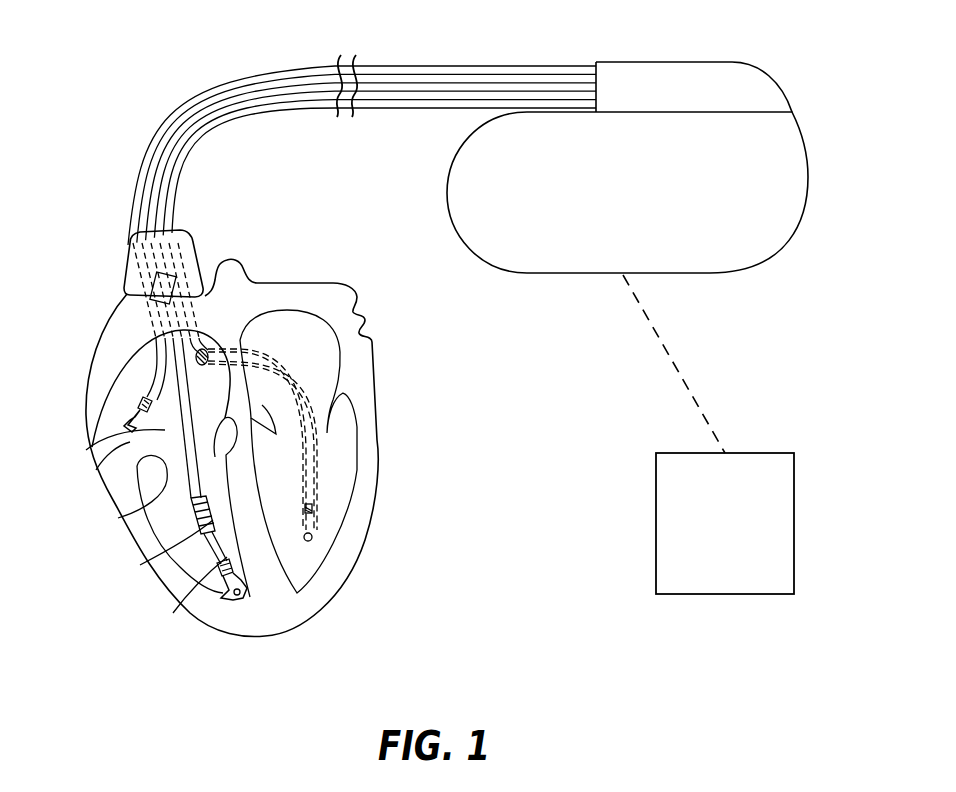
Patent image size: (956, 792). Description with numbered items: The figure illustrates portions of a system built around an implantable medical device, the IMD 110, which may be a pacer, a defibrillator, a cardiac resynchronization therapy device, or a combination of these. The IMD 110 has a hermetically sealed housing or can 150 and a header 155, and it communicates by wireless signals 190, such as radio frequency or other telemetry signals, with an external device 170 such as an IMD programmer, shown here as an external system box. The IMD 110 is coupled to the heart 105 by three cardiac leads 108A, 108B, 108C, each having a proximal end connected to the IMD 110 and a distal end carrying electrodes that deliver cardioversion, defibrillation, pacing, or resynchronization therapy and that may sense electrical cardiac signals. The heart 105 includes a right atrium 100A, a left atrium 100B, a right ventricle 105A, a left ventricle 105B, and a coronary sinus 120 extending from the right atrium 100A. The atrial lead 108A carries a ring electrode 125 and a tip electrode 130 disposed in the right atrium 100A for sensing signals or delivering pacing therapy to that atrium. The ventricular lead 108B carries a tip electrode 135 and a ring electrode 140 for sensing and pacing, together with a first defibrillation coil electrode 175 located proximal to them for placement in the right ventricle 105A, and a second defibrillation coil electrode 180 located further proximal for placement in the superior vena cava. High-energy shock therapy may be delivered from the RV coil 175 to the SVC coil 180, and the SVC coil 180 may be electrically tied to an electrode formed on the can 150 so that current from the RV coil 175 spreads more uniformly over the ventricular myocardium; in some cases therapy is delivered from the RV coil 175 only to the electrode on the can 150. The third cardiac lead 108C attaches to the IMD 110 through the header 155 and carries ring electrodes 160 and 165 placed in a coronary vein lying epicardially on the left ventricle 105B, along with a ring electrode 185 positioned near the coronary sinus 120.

The implantable medical device (IMD) 110 is at (657, 146).
The header 155 is at (770, 73).
The IMD housing or can 150 is at (808, 176).
The atrial lead 108A is at (267, 75).
The ventricular lead 108B is at (213, 110).
The third cardiac lead 108C is at (237, 133).
The second defibrillation coil electrode (SVC coil) 180 is at (155, 292).
The heart 105 is at (377, 418).
The right atrium 100A is at (137, 464).
The left atrium 100B is at (300, 328).
The right ventricle 105A is at (118, 518).
The left ventricle 105B is at (308, 565).
The ring electrode 125 is at (128, 397).
The tip electrode 130 is at (122, 435).
The first defibrillation coil electrode (RV coil) 175 is at (140, 565).
The ring electrode 140 is at (197, 578).
The tip electrode 135 is at (235, 594).
The ring electrode 185 is at (207, 337).
The coronary sinus 120 is at (203, 364).
The ring electrode 160 is at (312, 508).
The ring electrode 165 is at (310, 532).
The wireless signals 190 is at (672, 361).
The external device 170 is at (725, 596).